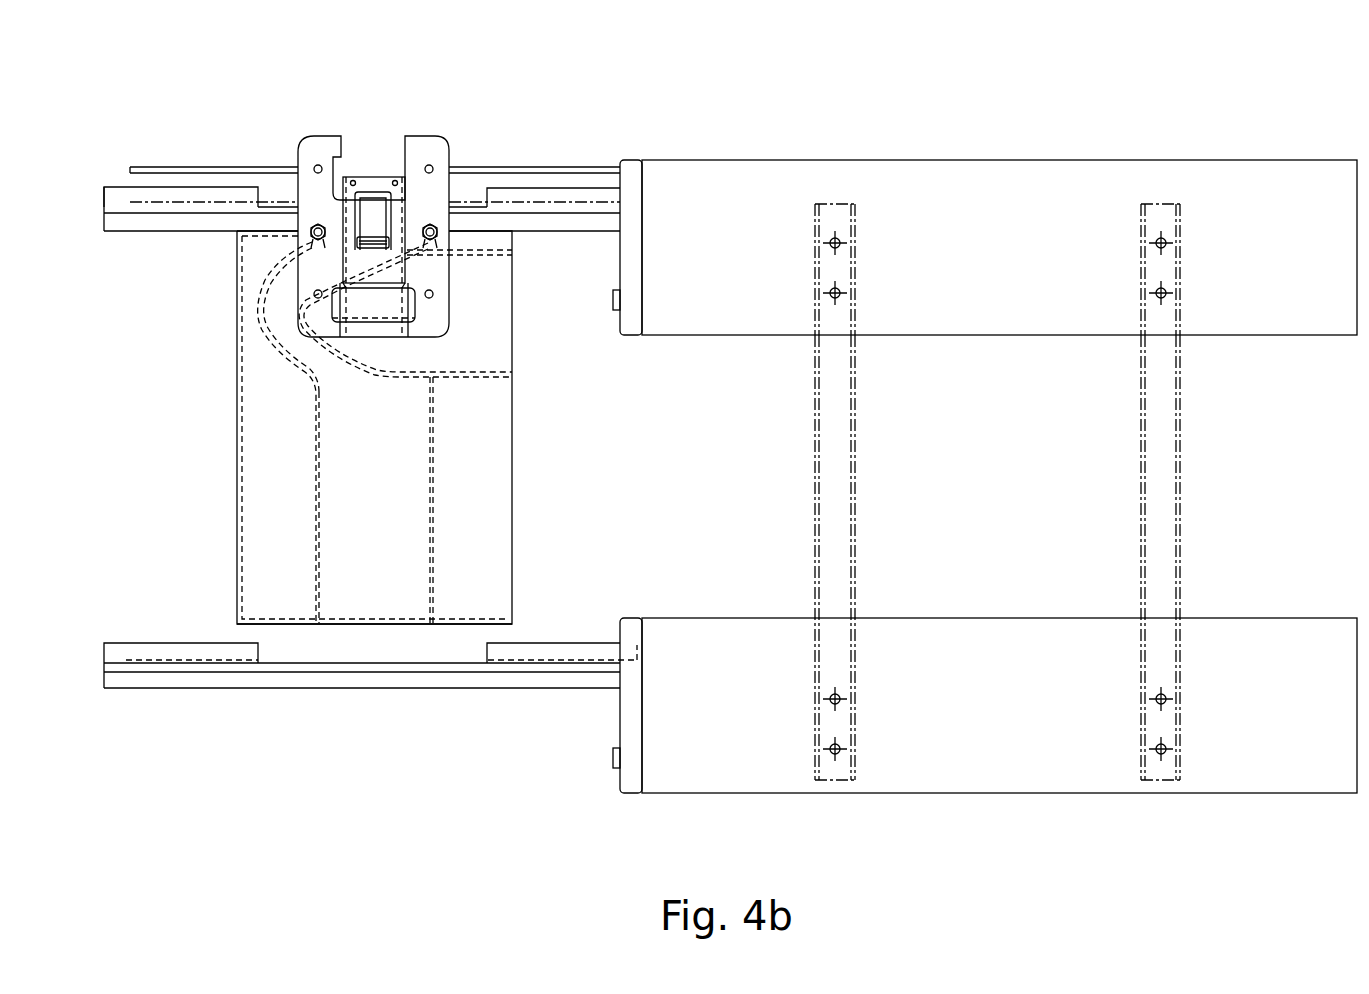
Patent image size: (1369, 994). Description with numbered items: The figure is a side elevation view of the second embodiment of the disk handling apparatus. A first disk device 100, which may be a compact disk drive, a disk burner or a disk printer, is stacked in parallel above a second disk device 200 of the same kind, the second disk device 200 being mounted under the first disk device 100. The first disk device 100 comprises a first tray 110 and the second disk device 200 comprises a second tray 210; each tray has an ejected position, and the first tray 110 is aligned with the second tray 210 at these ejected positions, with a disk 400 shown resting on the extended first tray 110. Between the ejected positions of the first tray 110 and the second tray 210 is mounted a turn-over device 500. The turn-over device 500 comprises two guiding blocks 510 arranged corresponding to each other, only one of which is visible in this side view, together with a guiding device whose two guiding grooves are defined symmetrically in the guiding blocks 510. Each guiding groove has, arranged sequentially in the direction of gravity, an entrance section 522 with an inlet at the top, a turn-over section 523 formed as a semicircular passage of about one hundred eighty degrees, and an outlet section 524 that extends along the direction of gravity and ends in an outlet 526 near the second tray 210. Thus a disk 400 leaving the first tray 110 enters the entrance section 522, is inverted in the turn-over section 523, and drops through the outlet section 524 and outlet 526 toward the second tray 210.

The first disk device 100 is at (1297, 185).
The first tray 110 is at (557, 223).
The second disk device 200 is at (1276, 763).
The second tray 210 is at (455, 688).
The disk 400 is at (182, 165).
The turn-over device 500 is at (545, 464).
The guiding block 510 is at (490, 582).
The entrance section 522 is at (330, 228).
The turn-over section 523 is at (277, 318).
The outlet section 524 is at (335, 516).
The outlet 526 is at (343, 623).